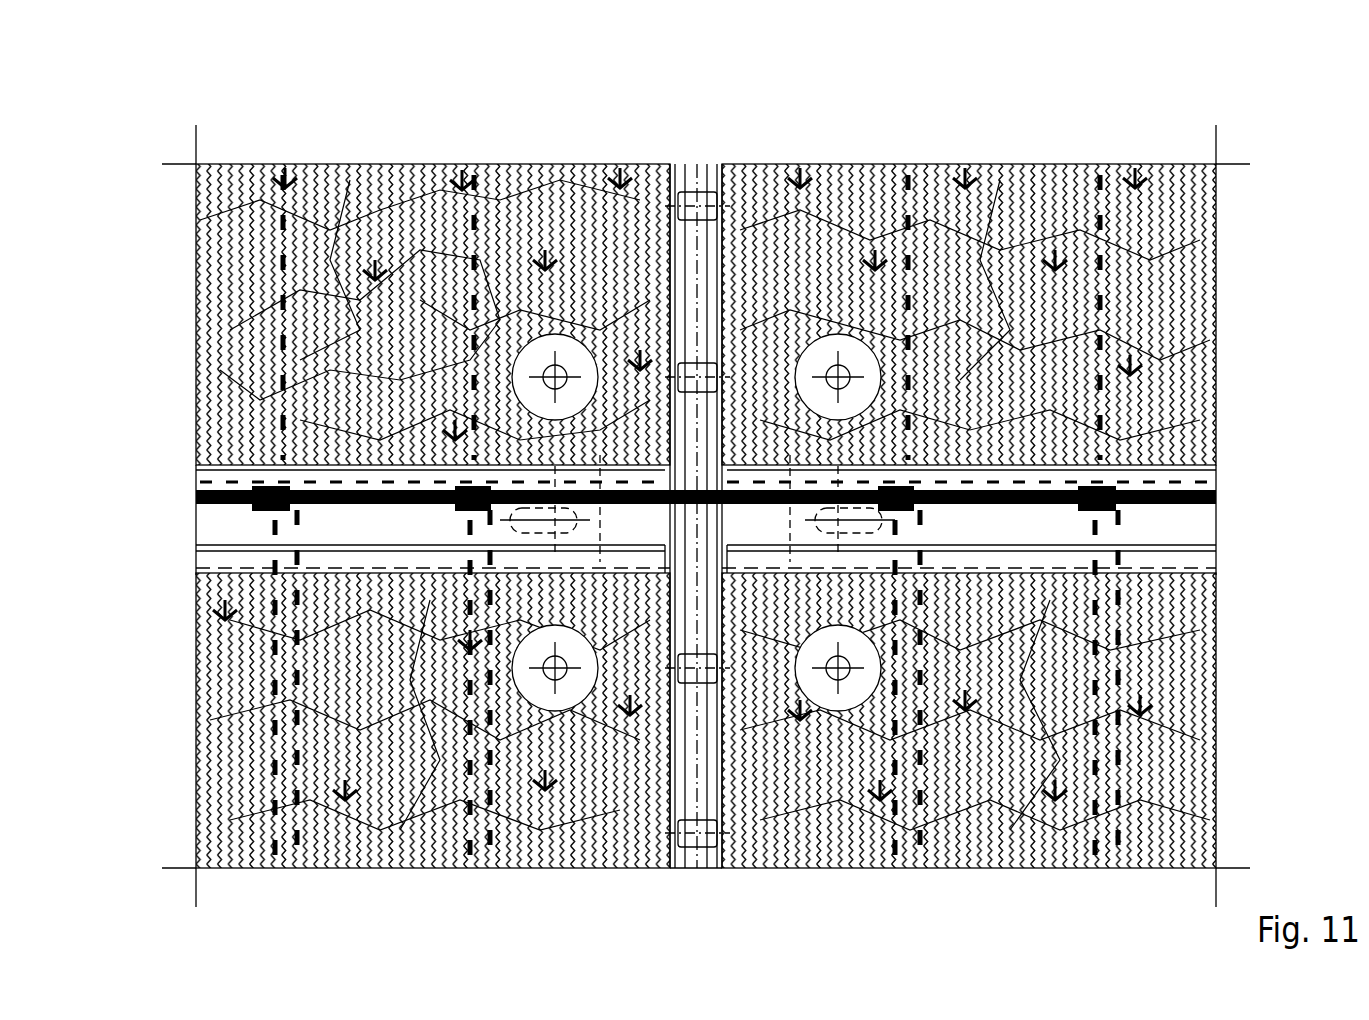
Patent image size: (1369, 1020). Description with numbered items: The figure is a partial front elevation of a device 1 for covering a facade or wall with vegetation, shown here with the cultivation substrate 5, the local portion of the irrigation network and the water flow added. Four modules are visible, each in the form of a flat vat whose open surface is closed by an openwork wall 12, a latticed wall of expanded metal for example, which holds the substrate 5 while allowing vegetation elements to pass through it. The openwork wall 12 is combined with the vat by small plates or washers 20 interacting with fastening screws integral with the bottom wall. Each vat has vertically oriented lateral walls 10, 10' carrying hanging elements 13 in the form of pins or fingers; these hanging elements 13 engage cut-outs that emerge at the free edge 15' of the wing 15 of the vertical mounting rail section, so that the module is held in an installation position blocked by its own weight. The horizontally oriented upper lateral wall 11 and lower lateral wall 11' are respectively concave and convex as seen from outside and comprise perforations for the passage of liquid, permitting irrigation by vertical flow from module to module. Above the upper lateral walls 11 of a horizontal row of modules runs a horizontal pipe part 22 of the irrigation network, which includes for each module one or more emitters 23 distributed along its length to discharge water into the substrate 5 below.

The device for covering facades or walls with vegetation 1 is at (138, 852).
The cultivation substrate 5 is at (506, 166).
The lateral wall 10 is at (722, 477).
The lateral wall 10' is at (689, 492).
The upper lateral wall 11 is at (761, 546).
The lower lateral wall 11' is at (658, 520).
The openwork wall 12 is at (1190, 612).
The hanging elements 13 is at (752, 168).
The wing 15 is at (696, 902).
The free edge 15' is at (795, 463).
The small plates or washers 20 is at (585, 345).
The horizontal pipe parts 22 is at (1216, 497).
The emitters 23 is at (1115, 487).